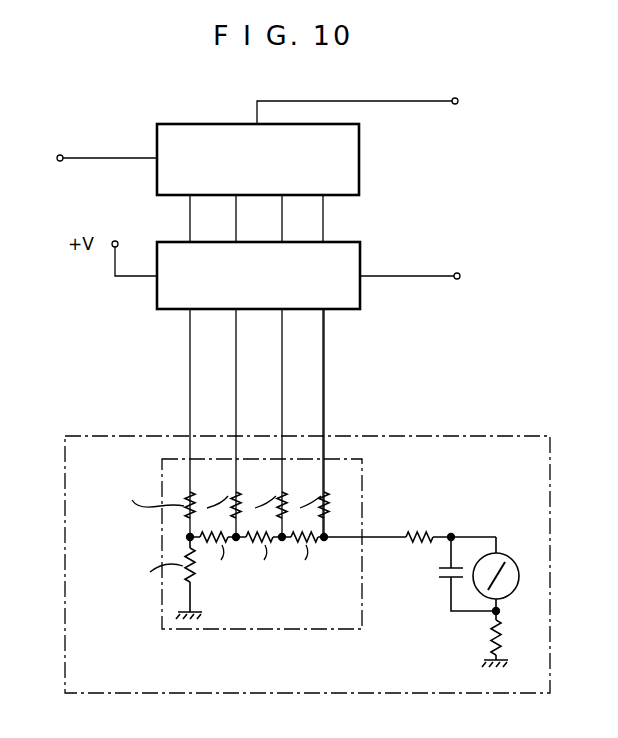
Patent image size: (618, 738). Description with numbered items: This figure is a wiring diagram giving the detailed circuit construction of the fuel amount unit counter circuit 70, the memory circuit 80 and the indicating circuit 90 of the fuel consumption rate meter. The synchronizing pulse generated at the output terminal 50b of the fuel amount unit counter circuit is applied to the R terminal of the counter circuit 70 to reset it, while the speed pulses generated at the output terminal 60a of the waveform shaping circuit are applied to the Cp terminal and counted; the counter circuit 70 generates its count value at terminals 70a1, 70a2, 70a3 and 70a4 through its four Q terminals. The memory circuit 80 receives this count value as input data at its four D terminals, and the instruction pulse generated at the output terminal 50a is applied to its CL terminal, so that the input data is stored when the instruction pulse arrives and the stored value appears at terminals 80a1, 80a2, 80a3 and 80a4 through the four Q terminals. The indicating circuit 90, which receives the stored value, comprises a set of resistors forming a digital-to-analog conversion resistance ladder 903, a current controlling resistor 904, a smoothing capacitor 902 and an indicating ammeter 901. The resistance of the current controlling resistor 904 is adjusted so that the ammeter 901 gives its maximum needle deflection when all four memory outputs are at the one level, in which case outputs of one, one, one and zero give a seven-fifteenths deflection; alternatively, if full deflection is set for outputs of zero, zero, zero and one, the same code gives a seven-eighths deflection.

The output terminal of the waveform shaping circuit 60a is at (57, 156).
The output terminal of the fuel amount unit counter circuit 50b is at (459, 102).
The fuel amount unit counter circuit 70 is at (359, 150).
The counter output terminal 70a1 is at (190, 216).
The counter output terminal 70a2 is at (236, 199).
The counter output terminal 70a3 is at (282, 210).
The counter output terminal 70a4 is at (323, 226).
The memory circuit 80 is at (360, 290).
The output terminal of the fuel amount unit counter circuit 50a is at (461, 277).
The memory output terminal 80a1 is at (190, 376).
The memory output terminal 80a2 is at (236, 348).
The memory output terminal 80a3 is at (282, 350).
The memory output terminal 80a4 is at (323, 385).
The indicating circuit 90 is at (550, 520).
The digital-to-analog conversion resistance ladder 903 is at (362, 495).
The current controlling resistor 904 is at (424, 530).
The smoothing capacitor 902 is at (440, 565).
The indicating ammeter 901 is at (526, 548).